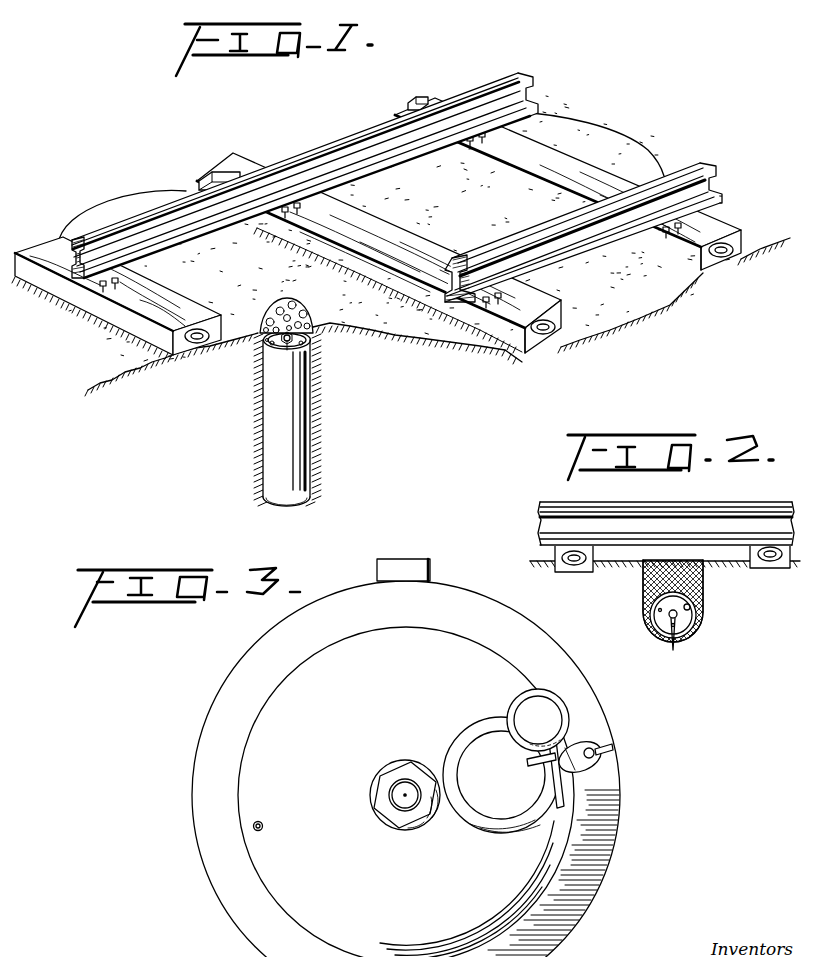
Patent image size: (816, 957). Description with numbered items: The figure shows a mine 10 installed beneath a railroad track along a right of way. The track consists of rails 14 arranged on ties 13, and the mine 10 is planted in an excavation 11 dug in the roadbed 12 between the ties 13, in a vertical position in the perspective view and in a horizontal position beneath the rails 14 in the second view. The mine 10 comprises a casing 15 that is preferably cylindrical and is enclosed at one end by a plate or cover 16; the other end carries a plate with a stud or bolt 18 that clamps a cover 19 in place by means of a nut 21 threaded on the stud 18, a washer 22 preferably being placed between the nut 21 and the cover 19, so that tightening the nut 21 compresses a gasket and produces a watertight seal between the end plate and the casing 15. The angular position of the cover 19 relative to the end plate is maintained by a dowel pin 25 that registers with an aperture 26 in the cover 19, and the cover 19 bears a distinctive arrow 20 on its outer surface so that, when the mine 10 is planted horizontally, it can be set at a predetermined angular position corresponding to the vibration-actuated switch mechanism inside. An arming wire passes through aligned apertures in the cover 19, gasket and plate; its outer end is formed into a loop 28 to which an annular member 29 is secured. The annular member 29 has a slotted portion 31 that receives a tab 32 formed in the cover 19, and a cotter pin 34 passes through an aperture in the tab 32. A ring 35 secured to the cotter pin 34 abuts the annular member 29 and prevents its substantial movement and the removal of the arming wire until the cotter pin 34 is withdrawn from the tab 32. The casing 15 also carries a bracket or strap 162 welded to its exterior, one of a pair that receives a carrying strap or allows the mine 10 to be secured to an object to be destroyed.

In FIG. 1, the mine 10 is at (277, 405).
In FIG. 2, the mine 10 is at (672, 611).
In FIG. 3, the mine 10 is at (624, 805).
In FIG. 1, the excavation 11 is at (313, 334).
In FIG. 2, the excavation 11 is at (702, 590).
In FIG. 1, the roadbed 12 is at (427, 336).
In FIG. 2, the roadbed 12 is at (626, 563).
In FIG. 1, the ties 13 is at (190, 190).
In FIG. 2, the ties 13 is at (545, 553).
In FIG. 1, the rails 14 is at (660, 168).
In FIG. 2, the rails 14 is at (668, 508).
In FIG. 1, the casing 15 is at (267, 455).
In FIG. 1, the plate or cover 16 is at (282, 502).
In FIG. 1, the stud or bolt 18 is at (296, 308).
In FIG. 2, the stud or bolt 18 is at (671, 629).
In FIG. 3, the stud or bolt 18 is at (404, 808).
In FIG. 1, the cover 19 is at (268, 335).
In FIG. 2, the cover 19 is at (660, 626).
In FIG. 3, the cover 19 is at (222, 733).
In FIG. 2, the arrow 20 is at (644, 596).
In FIG. 3, the arrow 20 is at (403, 588).
In FIG. 1, the nut 21 is at (286, 345).
In FIG. 2, the nut 21 is at (676, 630).
In FIG. 3, the nut 21 is at (401, 775).
In FIG. 1, the washer 22 is at (290, 352).
In FIG. 3, the washer 22 is at (387, 767).
In FIG. 1, the dowel pin 25 is at (268, 345).
In FIG. 2, the dowel pin 25 is at (655, 614).
In FIG. 3, the dowel pin 25 is at (263, 829).
In FIG. 1, the aperture 26 is at (265, 343).
In FIG. 3, the aperture 26 is at (261, 823).
In FIG. 3, the loop 28 is at (606, 748).
In FIG. 3, the annular member 29 is at (478, 722).
In FIG. 3, the slotted portion 31 is at (577, 763).
In FIG. 1, the tab 32 is at (303, 346).
In FIG. 2, the tab 32 is at (692, 609).
In FIG. 3, the tab 32 is at (538, 763).
In FIG. 3, the cotter pin 34 is at (549, 774).
In FIG. 3, the ring 35 is at (557, 692).
In FIG. 3, the bracket or strap 162 is at (405, 562).